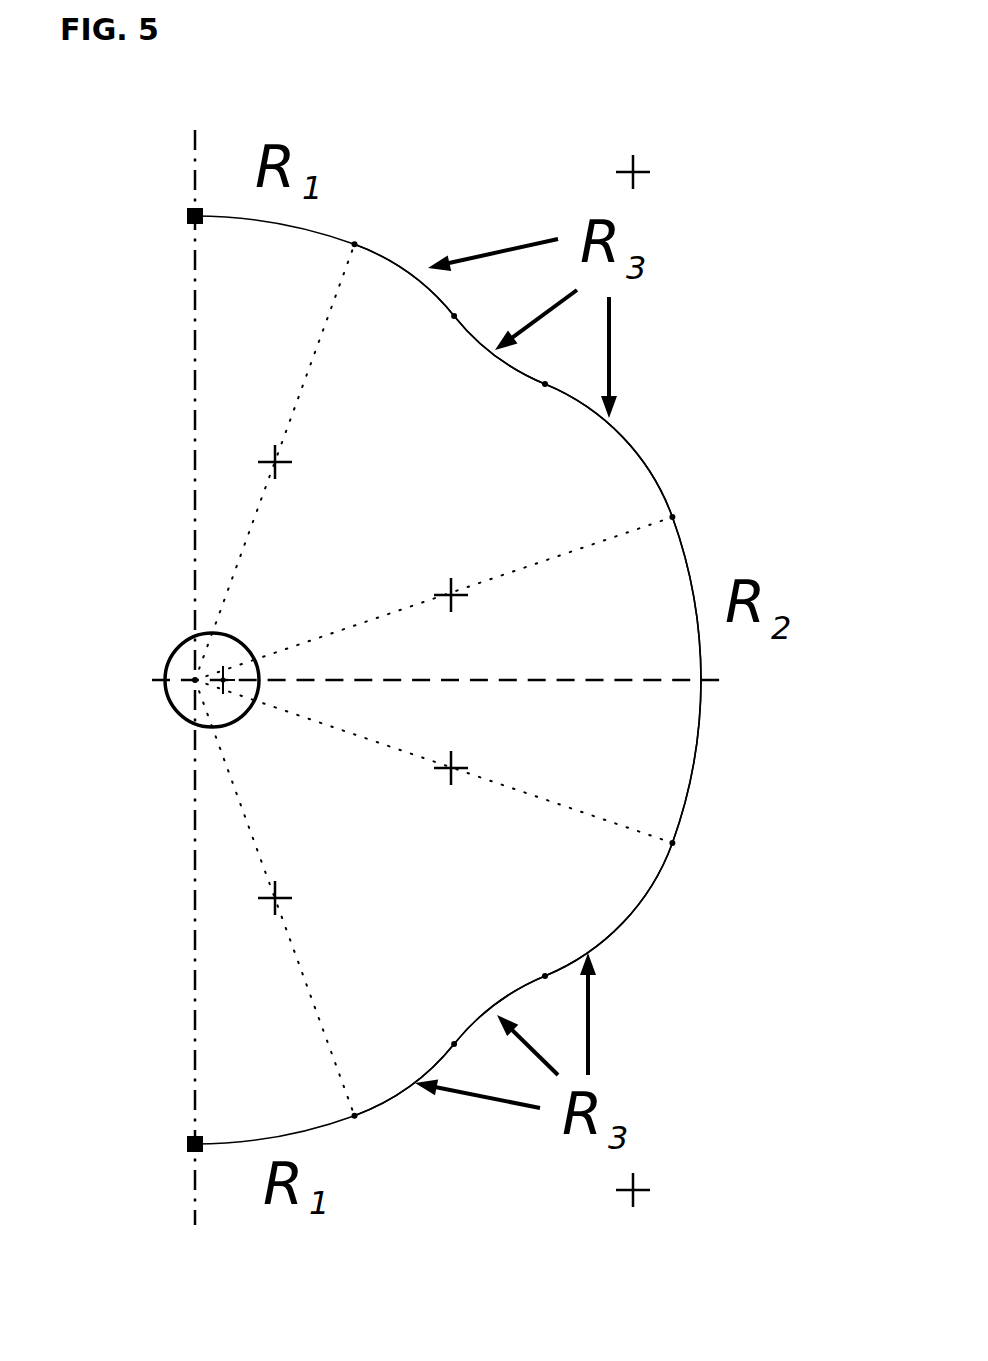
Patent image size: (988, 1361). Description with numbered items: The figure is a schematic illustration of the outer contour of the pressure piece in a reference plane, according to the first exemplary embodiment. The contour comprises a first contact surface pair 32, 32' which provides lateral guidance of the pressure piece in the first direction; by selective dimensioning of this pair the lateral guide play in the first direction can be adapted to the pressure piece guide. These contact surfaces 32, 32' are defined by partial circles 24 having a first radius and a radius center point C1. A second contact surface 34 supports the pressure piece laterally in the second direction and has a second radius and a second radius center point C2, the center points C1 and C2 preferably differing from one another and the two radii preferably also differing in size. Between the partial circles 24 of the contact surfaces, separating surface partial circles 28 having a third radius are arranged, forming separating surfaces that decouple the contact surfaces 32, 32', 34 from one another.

The partial circles 24 is at (268, 265).
The separating surface partial circles 28 is at (478, 402).
The first contact surface 32 is at (216, 131).
The first contact surface 32' is at (289, 1222).
The second contact surface 34 is at (702, 712).
The radius center point C1 is at (195, 680).
The second radius center point C2 is at (223, 680).